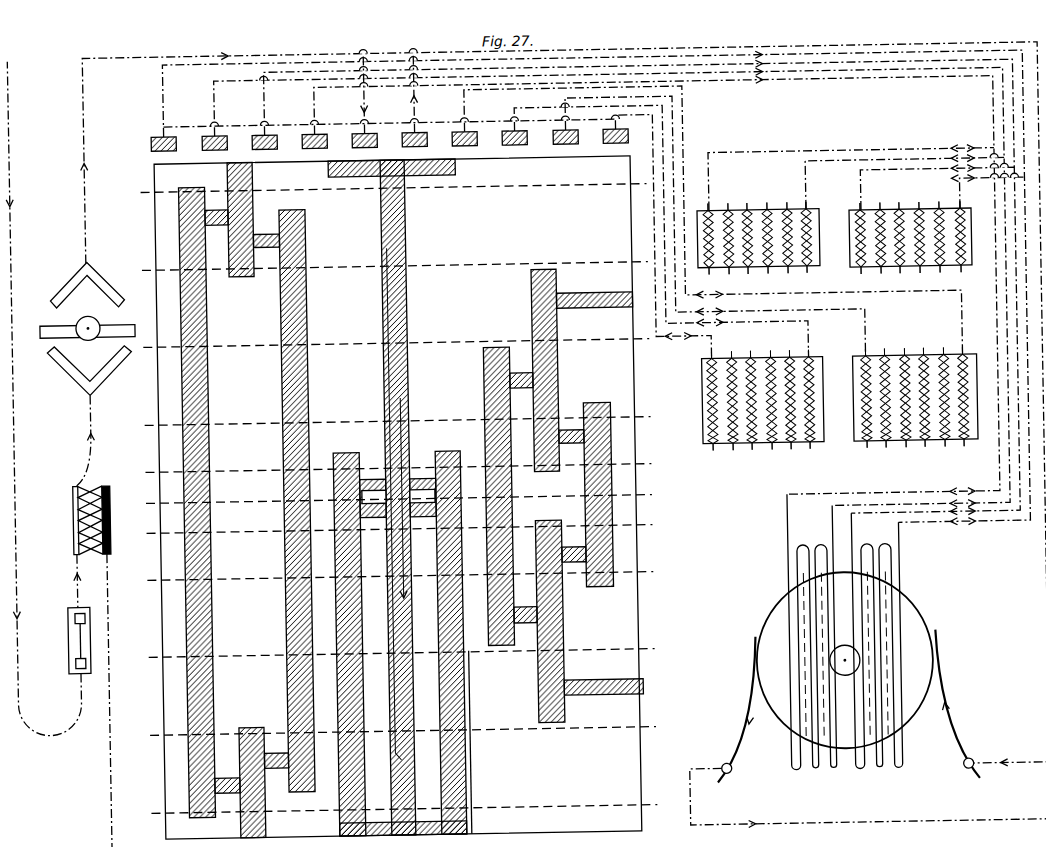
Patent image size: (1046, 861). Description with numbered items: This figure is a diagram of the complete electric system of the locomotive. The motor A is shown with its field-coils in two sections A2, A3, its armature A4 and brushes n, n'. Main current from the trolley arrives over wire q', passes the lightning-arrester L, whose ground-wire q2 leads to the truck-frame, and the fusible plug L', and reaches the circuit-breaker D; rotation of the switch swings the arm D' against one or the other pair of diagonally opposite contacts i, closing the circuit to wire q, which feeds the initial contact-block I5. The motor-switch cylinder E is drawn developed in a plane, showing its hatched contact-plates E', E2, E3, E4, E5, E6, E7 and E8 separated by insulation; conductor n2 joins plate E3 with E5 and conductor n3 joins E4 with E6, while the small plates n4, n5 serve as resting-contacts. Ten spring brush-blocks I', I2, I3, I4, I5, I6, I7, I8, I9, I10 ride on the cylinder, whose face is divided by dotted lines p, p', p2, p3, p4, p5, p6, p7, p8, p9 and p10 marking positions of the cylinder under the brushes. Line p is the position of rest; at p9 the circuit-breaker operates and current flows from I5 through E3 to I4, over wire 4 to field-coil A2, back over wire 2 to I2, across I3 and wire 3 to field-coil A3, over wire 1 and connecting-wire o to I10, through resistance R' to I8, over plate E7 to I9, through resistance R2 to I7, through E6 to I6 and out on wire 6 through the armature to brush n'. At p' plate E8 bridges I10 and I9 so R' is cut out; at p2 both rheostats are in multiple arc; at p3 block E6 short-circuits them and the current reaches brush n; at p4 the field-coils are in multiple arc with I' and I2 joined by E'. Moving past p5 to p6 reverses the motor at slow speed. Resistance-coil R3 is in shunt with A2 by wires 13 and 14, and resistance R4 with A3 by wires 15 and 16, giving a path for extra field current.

The motor-switch cylinder E is at (384, 498).
The contact-plate E' is at (222, 512).
The contact-plate E2 is at (254, 279).
The contact-plate E3 is at (315, 500).
The contact-plate E4 is at (400, 643).
The contact-plate E5 is at (438, 643).
The contact-plate E6 is at (397, 497).
The contact-plate E7 is at (511, 496).
The contact-plate E8 is at (587, 495).
The dotted line p is at (399, 497).
The dotted line p' is at (397, 418).
The dotted line p2 is at (396, 343).
The dotted line p3 is at (395, 263).
The dotted line p4 is at (393, 184).
The dotted line p5 is at (400, 575).
The dotted line p6 is at (402, 653).
The contact line p7 is at (403, 731).
The contact line p8 is at (404, 809).
The dotted line p9 is at (398, 465).
The contact line p10 is at (399, 528).
The armature-brush n is at (957, 704).
The armature-brush n' is at (866, 730).
The conductor n2 is at (388, 318).
The conductor n3 is at (402, 399).
The small plate n4 is at (374, 496).
The small plate n5 is at (422, 495).
The contact-block I' is at (590, 290).
The contact-block I2 is at (605, 289).
The contact-block I3 is at (635, 289).
The contact-block I4 is at (650, 287).
The contact-block I5 is at (364, 109).
The contact-block I6 is at (414, 108).
The contact-block I7 is at (706, 222).
The contact-block I8 is at (655, 230).
The contact-block I9 is at (709, 227).
The contact-block I10 is at (656, 237).
The connecting-wire o is at (389, 114).
The wire q is at (562, 410).
The trolley-wire q' is at (43, 399).
The ground-wire q2 is at (121, 700).
The circuit-breaker D is at (81, 375).
The circuit-breaker arm D' is at (88, 326).
The contacts i is at (87, 332).
The lightning-arrester L is at (97, 547).
The fusible plug L' is at (70, 640).
The resistance R' is at (762, 391).
The resistance R2 is at (915, 387).
The resistance-coil R3 is at (759, 228).
The resistance-coil R4 is at (911, 227).
The motor A is at (843, 660).
The field-coil section A2 is at (812, 631).
The field-coil section A3 is at (876, 639).
The armature A4 is at (770, 659).
The wire 1 is at (897, 284).
The wire 2 is at (888, 280).
The wire 3 is at (892, 287).
The wire 4 is at (879, 281).
The wire 6 is at (732, 384).
The wire 13 is at (851, 172).
The wire 14 is at (905, 175).
The wire 15 is at (937, 181).
The wire 16 is at (988, 185).